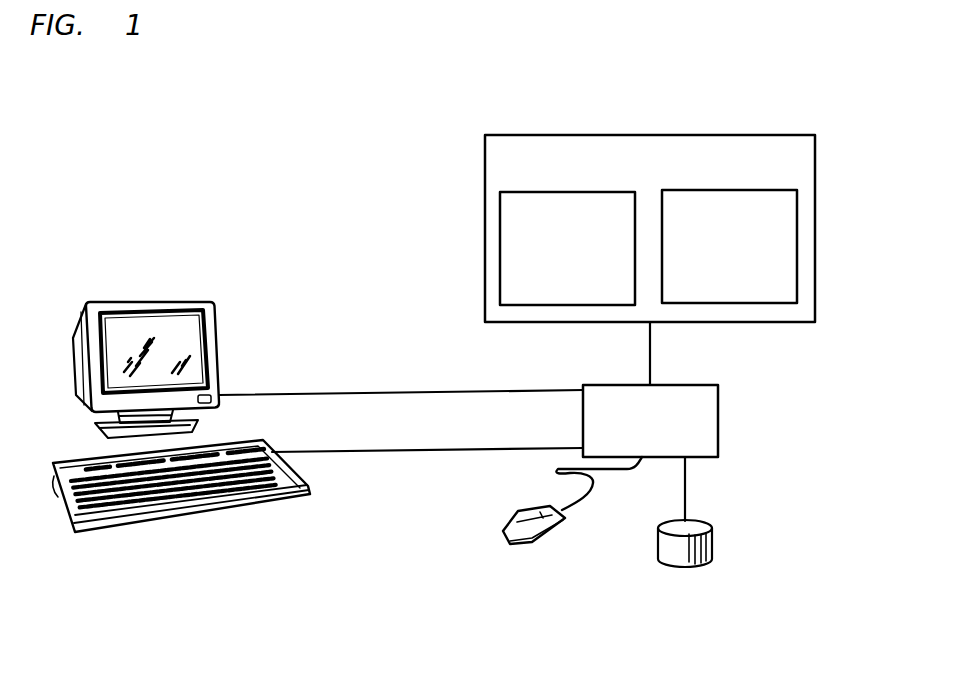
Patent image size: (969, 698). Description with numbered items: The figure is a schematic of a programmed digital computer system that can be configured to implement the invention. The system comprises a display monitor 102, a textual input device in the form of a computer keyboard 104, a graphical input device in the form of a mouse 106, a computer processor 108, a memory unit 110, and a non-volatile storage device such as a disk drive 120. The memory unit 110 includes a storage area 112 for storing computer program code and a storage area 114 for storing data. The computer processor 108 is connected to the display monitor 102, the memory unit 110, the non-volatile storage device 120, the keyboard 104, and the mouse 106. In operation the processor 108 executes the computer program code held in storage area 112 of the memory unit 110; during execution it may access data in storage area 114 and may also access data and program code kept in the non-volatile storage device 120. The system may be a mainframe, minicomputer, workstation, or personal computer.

The display monitor 102 is at (77, 403).
The computer keyboard 104 is at (75, 530).
The mouse 106 is at (512, 540).
The computer processor 108 is at (720, 393).
The memory unit 110 is at (713, 135).
The storage area 112 is at (552, 306).
The storage area 114 is at (733, 304).
The disk drive 120 is at (658, 537).